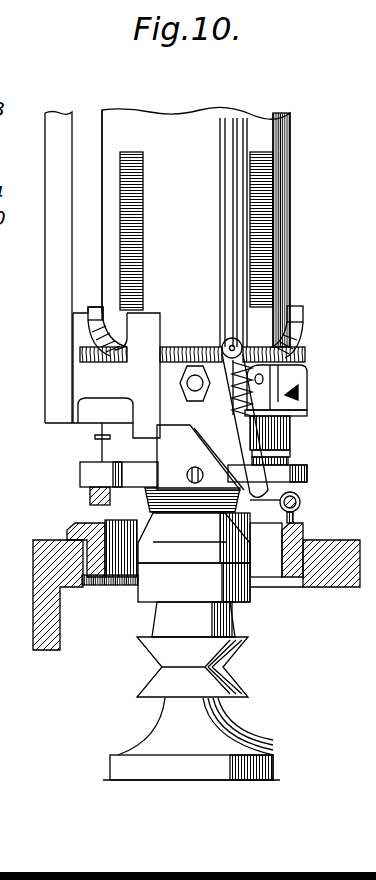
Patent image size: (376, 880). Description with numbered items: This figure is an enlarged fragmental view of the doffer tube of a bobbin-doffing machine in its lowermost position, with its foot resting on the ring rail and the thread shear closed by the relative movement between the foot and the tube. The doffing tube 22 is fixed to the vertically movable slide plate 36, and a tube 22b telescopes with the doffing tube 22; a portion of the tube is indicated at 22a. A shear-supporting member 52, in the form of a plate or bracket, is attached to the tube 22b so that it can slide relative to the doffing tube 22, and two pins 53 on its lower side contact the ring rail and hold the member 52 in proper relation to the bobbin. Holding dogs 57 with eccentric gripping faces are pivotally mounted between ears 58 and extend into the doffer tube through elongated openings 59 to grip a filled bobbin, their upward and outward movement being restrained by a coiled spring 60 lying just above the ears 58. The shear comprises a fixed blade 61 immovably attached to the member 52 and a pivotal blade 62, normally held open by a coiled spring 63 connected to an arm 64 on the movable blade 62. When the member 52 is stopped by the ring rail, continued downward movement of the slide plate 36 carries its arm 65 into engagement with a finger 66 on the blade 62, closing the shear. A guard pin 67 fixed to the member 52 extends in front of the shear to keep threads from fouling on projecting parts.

The doffing tube 22 is at (196, 217).
The frame body end portion 22a is at (285, 150).
The tube 22b is at (115, 448).
The slide plate 36 is at (45, 248).
The shear-supporting member 52 is at (308, 470).
The pins 53 is at (88, 492).
The holding dogs 57 is at (136, 308).
The ears 58 is at (290, 380).
The elongated openings 59 is at (144, 252).
The coiled spring 60 is at (282, 368).
The fixed blade 61 is at (285, 460).
The pivotal blade 62 is at (239, 425).
The coiled spring 63 is at (300, 412).
The arm 64 is at (227, 349).
The arm 65 is at (102, 274).
The finger 66 is at (200, 457).
The guard pin 67 is at (240, 472).